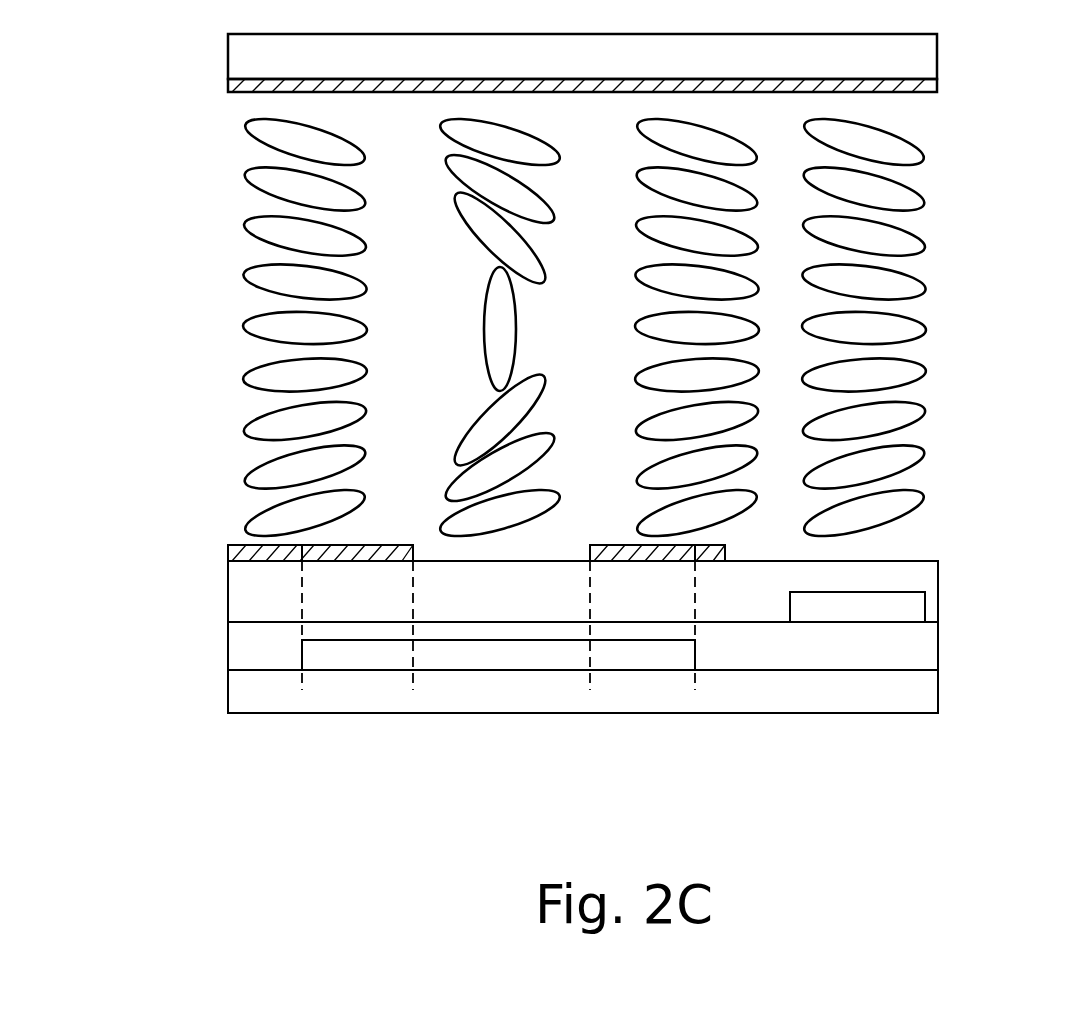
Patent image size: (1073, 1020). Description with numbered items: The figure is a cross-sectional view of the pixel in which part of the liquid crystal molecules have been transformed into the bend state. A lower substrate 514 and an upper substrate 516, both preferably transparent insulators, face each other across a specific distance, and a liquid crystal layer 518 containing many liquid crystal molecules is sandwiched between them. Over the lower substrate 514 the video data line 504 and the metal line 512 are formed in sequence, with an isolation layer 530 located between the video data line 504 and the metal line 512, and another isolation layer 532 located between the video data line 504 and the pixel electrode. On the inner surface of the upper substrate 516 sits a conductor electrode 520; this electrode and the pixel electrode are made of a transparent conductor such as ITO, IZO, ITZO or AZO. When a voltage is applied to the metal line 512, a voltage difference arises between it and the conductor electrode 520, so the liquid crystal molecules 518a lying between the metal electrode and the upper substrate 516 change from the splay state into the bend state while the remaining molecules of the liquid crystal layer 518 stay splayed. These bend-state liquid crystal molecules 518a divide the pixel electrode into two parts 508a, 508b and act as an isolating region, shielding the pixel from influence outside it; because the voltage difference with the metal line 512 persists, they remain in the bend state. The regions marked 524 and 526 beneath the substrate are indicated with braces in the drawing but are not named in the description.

The upper substrate 516 is at (935, 54).
The conductor electrode 520 is at (935, 88).
The liquid crystal layer 518 is at (932, 112).
The liquid crystal molecules in bend state 518a is at (552, 110).
The first part of pixel electrode 508a is at (233, 551).
The second part of pixel electrode 508b is at (718, 551).
The isolation layer 532 is at (933, 586).
The isolation layer 530 is at (933, 644).
The lower substrate 514 is at (933, 684).
The metal line 512 is at (463, 655).
The video data line 504 is at (852, 612).
The first overlap region 524 is at (413, 717).
The second overlap region 526 is at (695, 717).